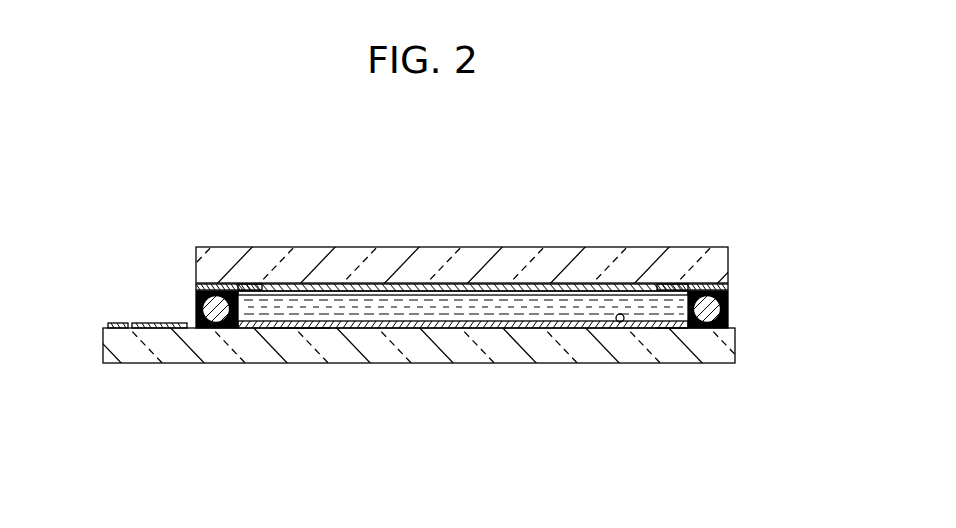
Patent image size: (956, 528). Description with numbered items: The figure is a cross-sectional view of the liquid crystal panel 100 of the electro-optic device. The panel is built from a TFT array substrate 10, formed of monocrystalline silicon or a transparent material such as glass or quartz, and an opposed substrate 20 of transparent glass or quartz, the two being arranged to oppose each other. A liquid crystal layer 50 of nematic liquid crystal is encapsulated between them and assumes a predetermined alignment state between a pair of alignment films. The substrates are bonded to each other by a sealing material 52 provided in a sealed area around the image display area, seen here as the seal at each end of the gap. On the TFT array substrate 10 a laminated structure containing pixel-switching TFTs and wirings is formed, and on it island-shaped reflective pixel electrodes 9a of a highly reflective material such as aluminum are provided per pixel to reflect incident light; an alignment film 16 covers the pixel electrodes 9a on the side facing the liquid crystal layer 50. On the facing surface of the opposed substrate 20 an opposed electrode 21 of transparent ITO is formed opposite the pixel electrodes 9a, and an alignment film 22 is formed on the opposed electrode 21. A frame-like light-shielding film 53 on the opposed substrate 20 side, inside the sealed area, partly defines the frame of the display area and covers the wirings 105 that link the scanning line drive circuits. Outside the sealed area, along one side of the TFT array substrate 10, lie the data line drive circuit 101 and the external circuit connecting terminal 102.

The liquid crystal panel 100 is at (712, 126).
The opposed substrate 20 is at (443, 258).
The opposed electrode 21 is at (612, 289).
The alignment film 22 is at (554, 295).
The frame-like light-shielding film 53 is at (262, 282).
The sealing material 52 is at (195, 303).
The data line drive circuit 101 is at (157, 323).
The external circuit connecting terminal 102 is at (125, 325).
The TFT array substrate 10 is at (518, 352).
The reflective pixel electrode 9a is at (300, 330).
The liquid crystal layer 50 is at (462, 314).
The alignment film 16 is at (620, 322).
The wirings 105 is at (672, 329).